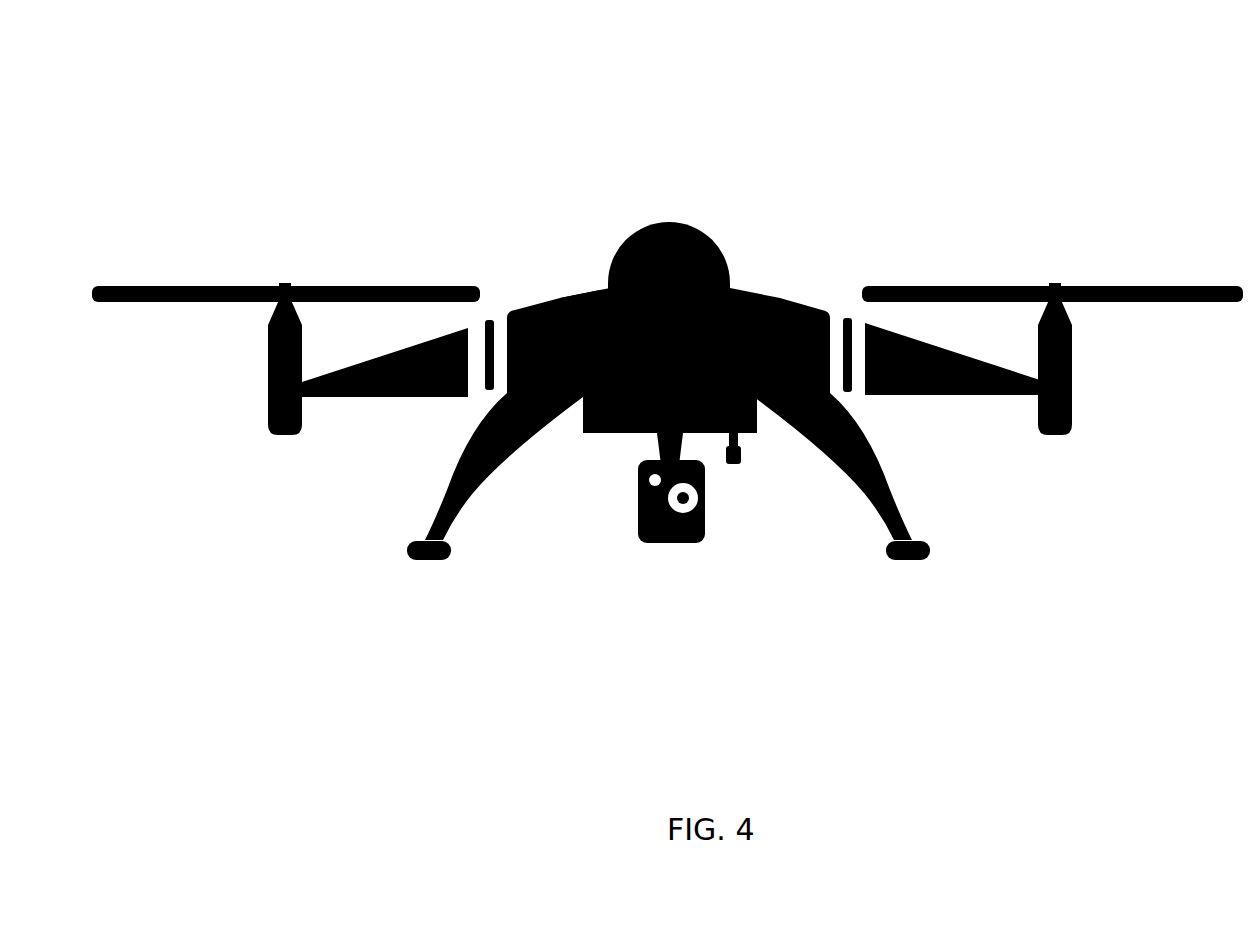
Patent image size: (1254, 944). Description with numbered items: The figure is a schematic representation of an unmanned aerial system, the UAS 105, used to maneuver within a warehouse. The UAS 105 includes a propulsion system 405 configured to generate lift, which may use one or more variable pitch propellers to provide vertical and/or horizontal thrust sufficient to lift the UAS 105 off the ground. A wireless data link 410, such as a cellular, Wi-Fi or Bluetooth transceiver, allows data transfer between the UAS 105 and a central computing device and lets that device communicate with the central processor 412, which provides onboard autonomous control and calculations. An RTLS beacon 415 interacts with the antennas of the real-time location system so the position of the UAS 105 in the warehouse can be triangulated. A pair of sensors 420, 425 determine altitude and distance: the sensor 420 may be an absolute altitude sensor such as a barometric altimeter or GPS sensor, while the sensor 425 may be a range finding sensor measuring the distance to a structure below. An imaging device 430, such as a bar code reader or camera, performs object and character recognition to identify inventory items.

The UAS 105 is at (1185, 104).
The propulsion system 405 is at (268, 349).
The wireless data link 410 is at (613, 253).
The central processor 412 is at (573, 292).
The RTLS beacon 415 is at (716, 241).
The sensor 420 is at (497, 388).
The sensor 425 is at (742, 442).
The imaging device 430 is at (637, 515).